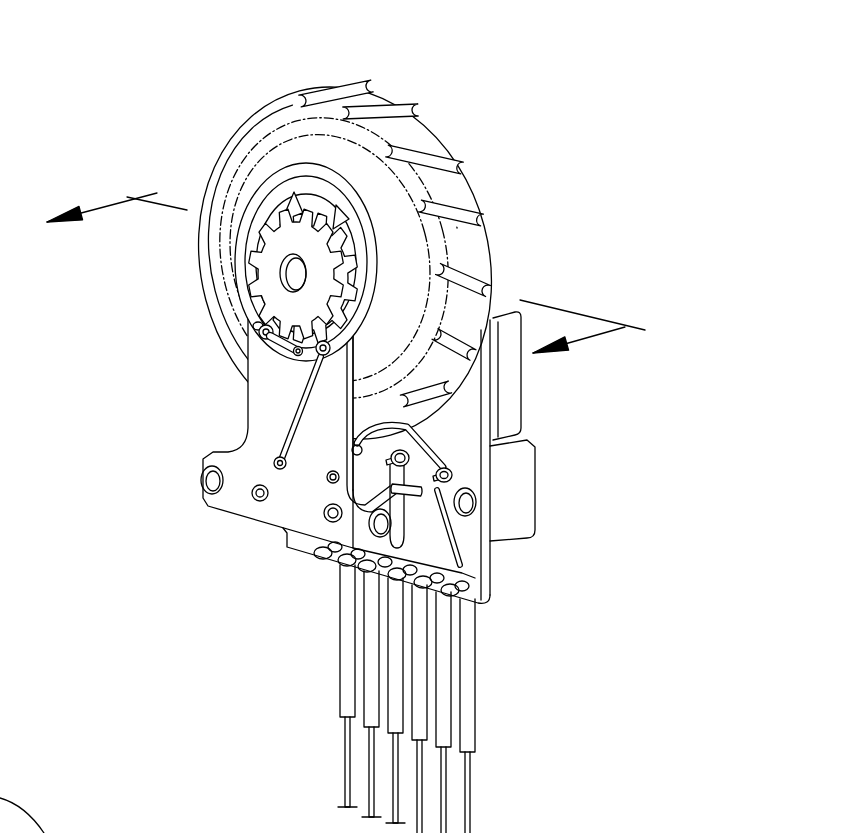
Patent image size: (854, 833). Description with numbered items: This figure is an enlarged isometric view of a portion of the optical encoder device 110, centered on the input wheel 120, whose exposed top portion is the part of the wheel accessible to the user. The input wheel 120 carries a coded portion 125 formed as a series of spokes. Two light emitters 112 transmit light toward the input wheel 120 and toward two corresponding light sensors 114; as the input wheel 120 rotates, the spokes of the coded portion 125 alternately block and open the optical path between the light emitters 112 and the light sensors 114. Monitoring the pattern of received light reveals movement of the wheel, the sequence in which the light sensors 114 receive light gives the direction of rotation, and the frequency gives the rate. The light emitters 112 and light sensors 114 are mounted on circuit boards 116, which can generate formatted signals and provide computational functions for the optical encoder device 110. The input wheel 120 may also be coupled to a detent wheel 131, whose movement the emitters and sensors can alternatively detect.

The optical encoder device 110 is at (476, 106).
The input wheel 120 is at (360, 96).
The coded portion 125 is at (310, 190).
The detent wheel 131 is at (275, 248).
The light sensor 114 is at (493, 250).
The circuit board 116 is at (262, 443).
The light emitter 112 is at (280, 340).